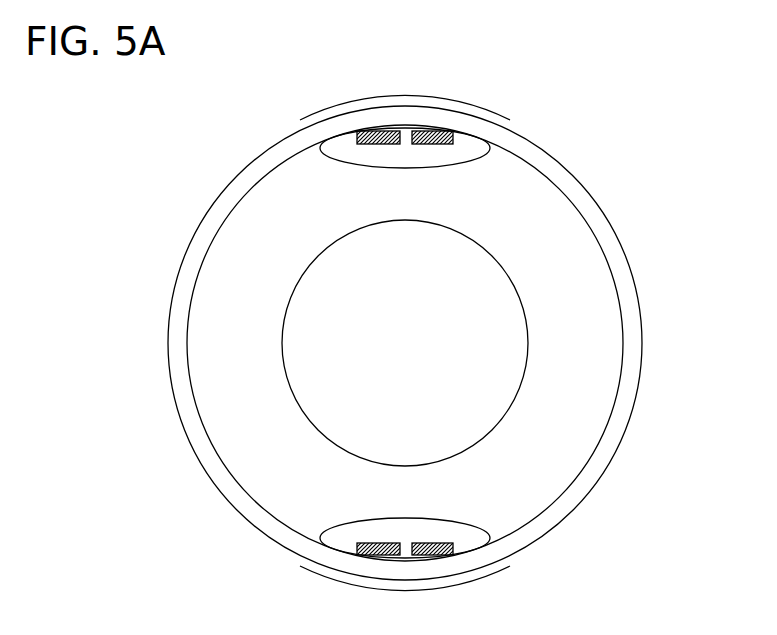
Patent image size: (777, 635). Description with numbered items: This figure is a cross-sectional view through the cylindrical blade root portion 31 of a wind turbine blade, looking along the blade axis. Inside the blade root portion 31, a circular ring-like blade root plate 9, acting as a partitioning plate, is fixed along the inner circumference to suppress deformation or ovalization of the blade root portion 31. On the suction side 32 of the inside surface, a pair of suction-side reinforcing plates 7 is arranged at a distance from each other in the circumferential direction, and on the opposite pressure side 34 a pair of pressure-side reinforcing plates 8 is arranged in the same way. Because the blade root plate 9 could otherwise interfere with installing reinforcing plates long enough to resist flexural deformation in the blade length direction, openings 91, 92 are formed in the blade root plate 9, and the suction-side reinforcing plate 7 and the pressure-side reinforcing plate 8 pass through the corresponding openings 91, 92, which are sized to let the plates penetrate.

The suction-side reinforcing plate 7 is at (430, 131).
The pressure-side reinforcing plate 8 is at (433, 555).
The blade root plate 9 is at (249, 353).
The blade root portion 31 is at (633, 328).
The suction side 32 is at (550, 112).
The pressure side 34 is at (527, 583).
The opening 91 is at (459, 164).
The opening 92 is at (455, 522).